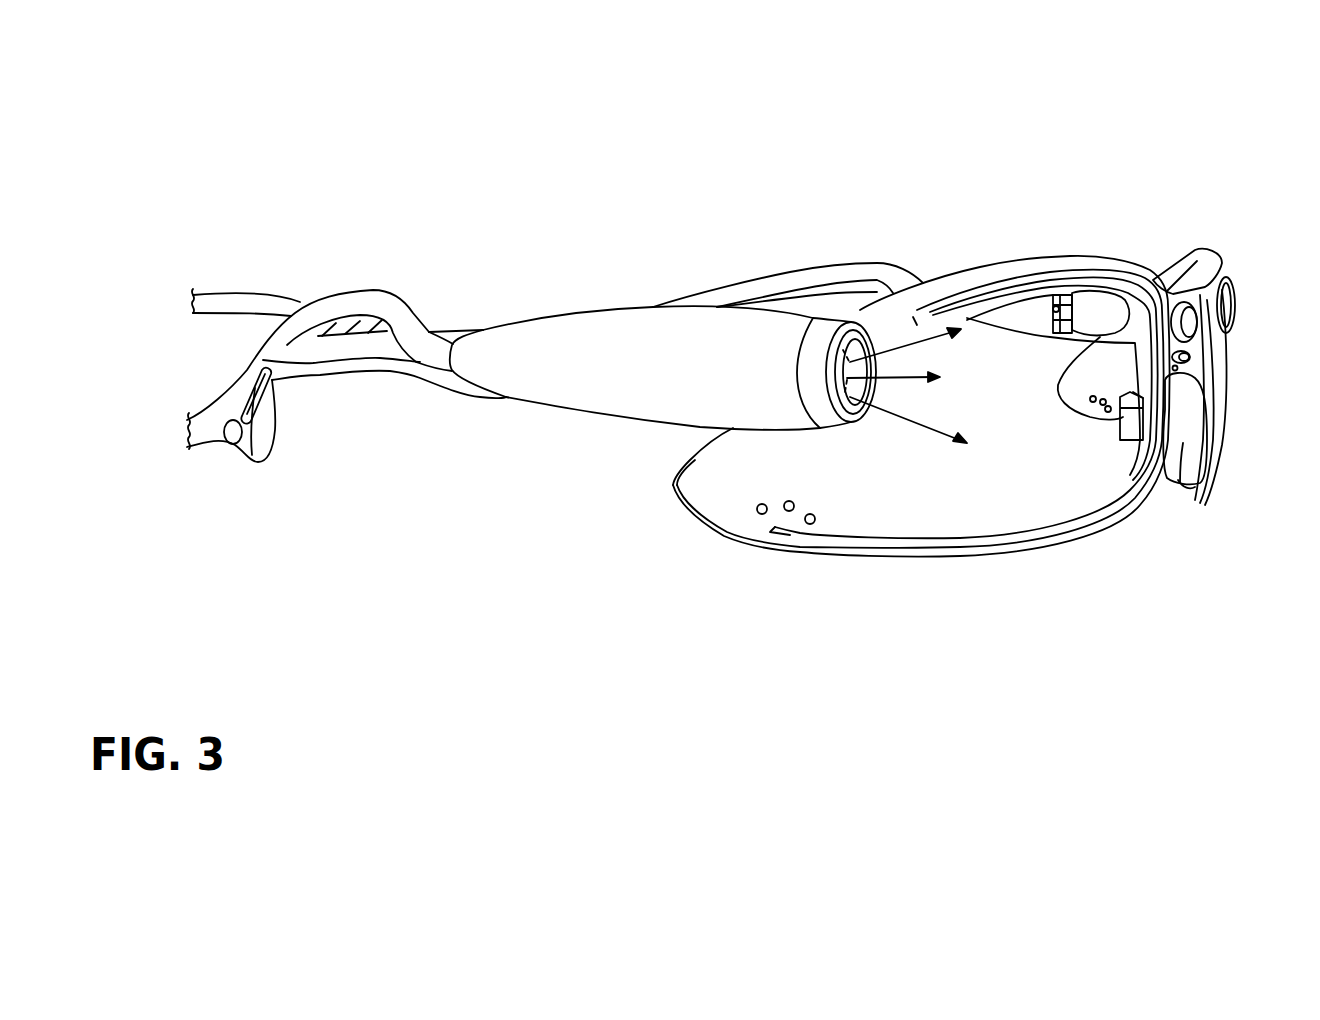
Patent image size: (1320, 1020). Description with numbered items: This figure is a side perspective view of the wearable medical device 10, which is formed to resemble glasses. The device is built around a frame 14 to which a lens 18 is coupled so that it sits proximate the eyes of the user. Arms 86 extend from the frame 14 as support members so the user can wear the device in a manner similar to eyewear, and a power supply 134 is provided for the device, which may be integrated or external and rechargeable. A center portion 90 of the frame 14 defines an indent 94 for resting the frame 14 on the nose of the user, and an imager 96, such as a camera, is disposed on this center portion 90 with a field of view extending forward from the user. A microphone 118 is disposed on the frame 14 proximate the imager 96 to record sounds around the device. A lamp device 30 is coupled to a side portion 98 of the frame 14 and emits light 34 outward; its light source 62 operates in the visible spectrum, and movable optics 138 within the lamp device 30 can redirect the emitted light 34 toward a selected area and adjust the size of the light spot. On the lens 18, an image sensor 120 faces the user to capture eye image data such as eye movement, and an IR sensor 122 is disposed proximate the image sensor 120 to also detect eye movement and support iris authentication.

The wearable medical device 10 is at (1149, 183).
The frame 14 is at (1094, 265).
The lens 18 is at (1023, 498).
The lamp device 30 is at (634, 342).
The light 34 is at (920, 427).
The light source 62 is at (1093, 396).
The arm 86 is at (314, 353).
The center portion 90 is at (1180, 283).
The indent 94 is at (1183, 486).
The imager 96 is at (1190, 323).
The side portion 98 is at (870, 323).
The microphone 118 is at (1179, 371).
The image sensor 120 is at (786, 511).
The IR sensor 122 is at (811, 524).
The power supply 134 is at (378, 303).
The movable optics 138 is at (840, 363).